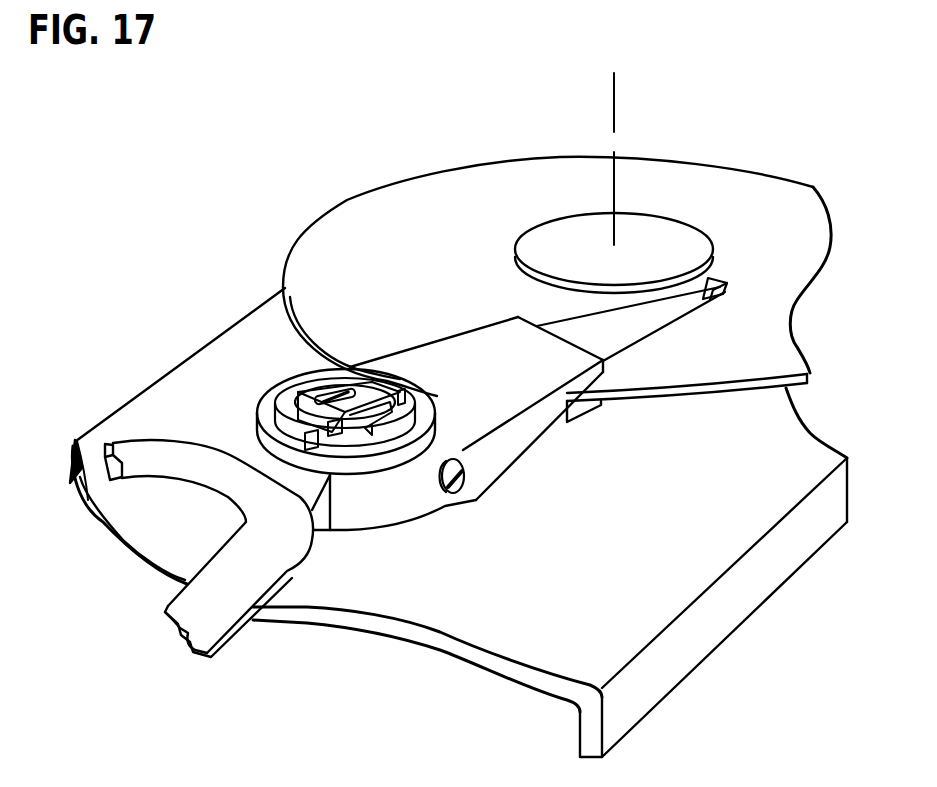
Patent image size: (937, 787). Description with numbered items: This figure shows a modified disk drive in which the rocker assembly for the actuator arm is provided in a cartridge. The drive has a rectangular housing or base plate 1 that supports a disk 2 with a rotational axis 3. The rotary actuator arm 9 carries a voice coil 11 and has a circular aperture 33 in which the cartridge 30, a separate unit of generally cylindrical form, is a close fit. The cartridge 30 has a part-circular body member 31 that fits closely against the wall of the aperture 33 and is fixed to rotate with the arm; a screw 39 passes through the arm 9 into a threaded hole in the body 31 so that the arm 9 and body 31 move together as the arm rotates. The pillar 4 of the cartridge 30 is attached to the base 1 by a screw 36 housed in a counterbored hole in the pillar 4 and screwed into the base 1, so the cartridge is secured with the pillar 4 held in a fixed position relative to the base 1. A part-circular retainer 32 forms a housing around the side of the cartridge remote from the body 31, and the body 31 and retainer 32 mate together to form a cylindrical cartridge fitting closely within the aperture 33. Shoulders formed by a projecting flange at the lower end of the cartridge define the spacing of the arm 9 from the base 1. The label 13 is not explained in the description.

The base plate 1 is at (190, 410).
The disk 2 is at (690, 187).
The rotational axis 3 is at (613, 197).
The pillar 4 is at (370, 378).
The actuator arm 9 is at (500, 350).
The voice coil 11 is at (133, 455).
The disk 13 is at (488, 203).
The cartridge 30 is at (722, 287).
The body member 31 is at (410, 380).
The retainer 32 is at (267, 390).
The circular aperture 33 is at (427, 437).
The screw 36 is at (337, 367).
The screw 39 is at (467, 491).